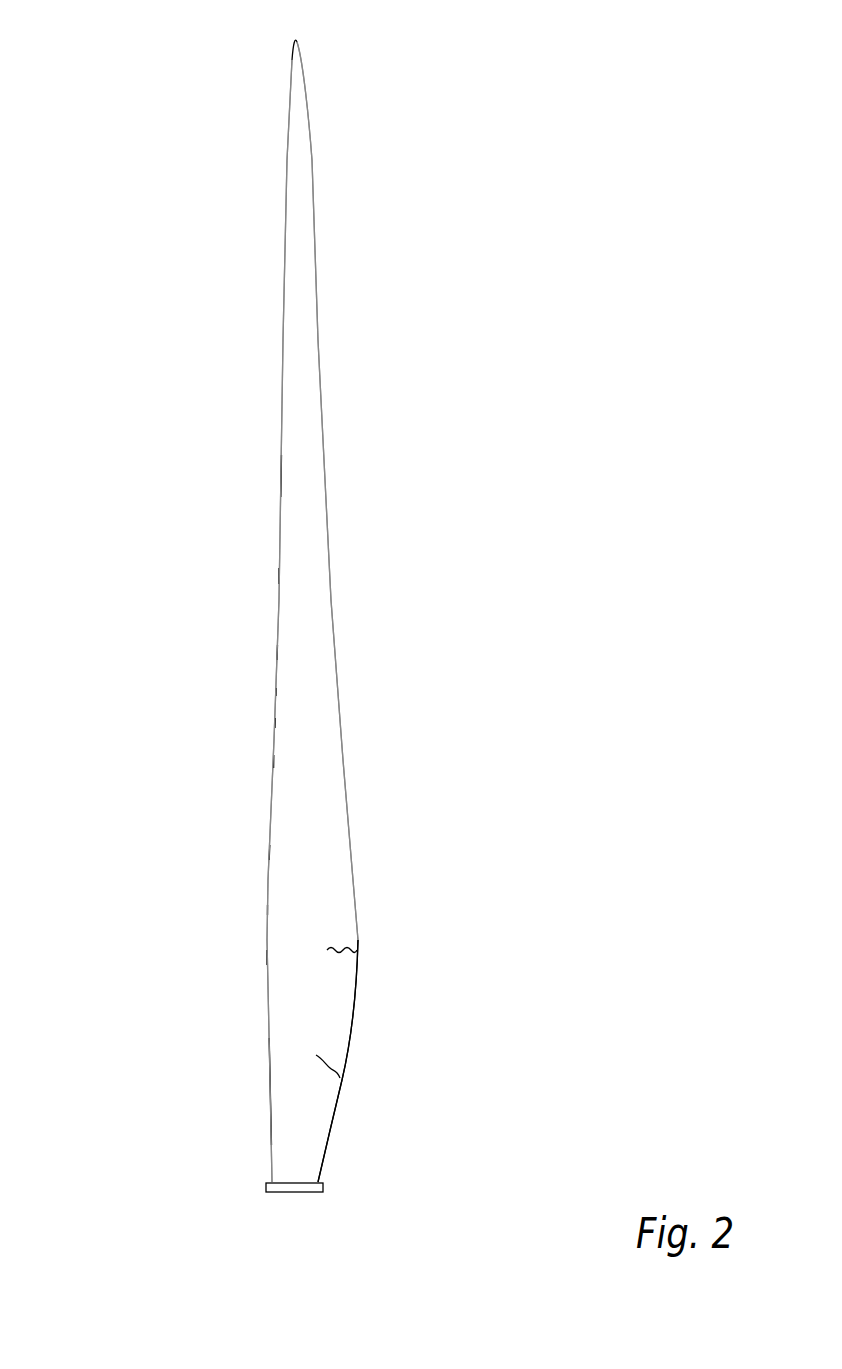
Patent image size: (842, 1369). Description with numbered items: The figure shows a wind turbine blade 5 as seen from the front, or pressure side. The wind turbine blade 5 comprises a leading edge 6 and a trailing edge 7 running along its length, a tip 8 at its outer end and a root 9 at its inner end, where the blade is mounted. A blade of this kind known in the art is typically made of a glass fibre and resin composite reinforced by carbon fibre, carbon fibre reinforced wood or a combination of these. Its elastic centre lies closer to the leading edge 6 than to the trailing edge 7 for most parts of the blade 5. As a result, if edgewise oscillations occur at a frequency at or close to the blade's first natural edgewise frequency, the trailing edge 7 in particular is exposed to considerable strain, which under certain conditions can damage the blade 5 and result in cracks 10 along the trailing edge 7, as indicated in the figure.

The wind turbine blade 5 is at (255, 450).
The leading edge 6 is at (280, 569).
The trailing edge 7 is at (336, 681).
The tip 8 is at (296, 38).
The root 9 is at (295, 1192).
The cracks 10 is at (357, 942).